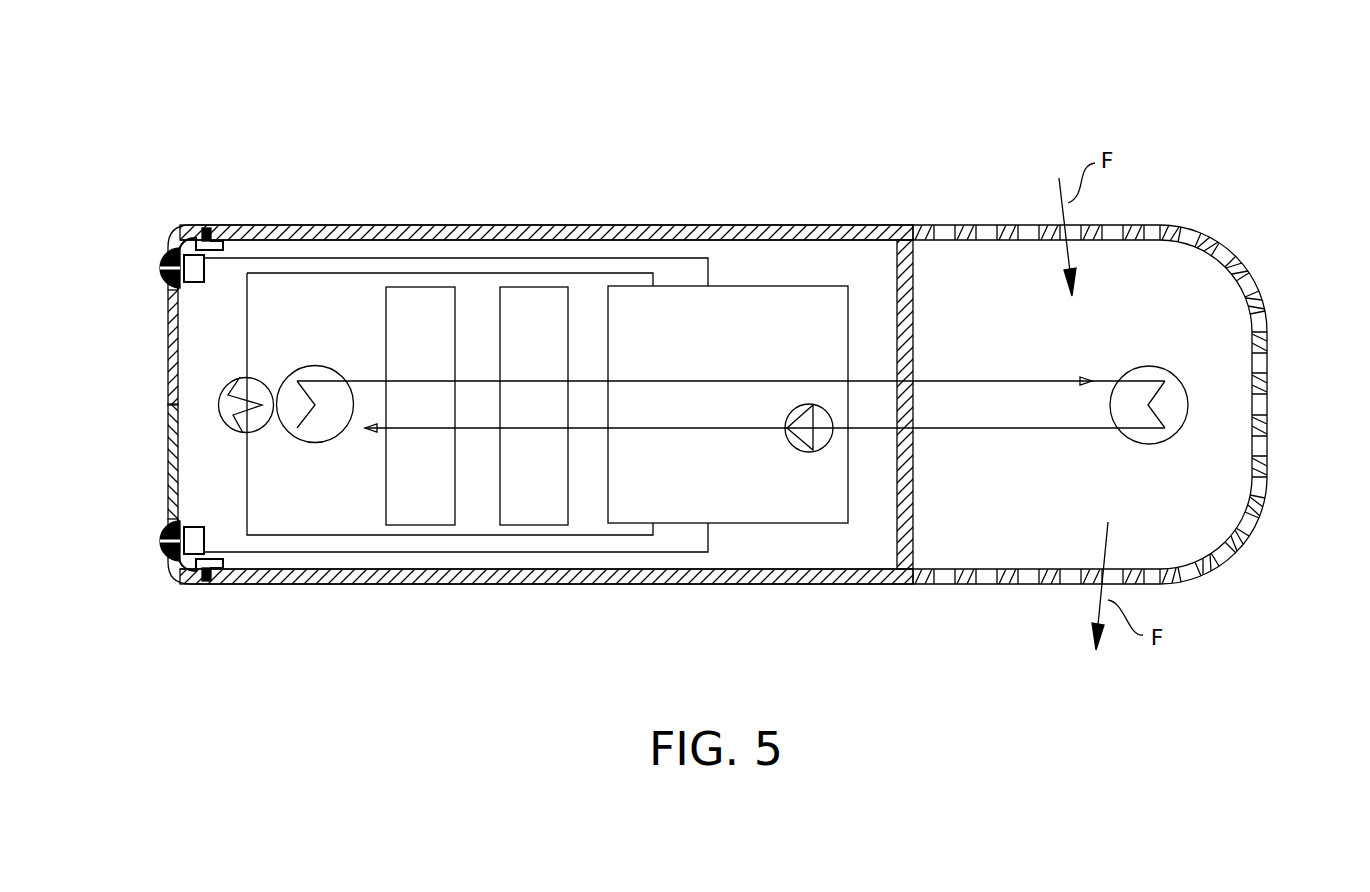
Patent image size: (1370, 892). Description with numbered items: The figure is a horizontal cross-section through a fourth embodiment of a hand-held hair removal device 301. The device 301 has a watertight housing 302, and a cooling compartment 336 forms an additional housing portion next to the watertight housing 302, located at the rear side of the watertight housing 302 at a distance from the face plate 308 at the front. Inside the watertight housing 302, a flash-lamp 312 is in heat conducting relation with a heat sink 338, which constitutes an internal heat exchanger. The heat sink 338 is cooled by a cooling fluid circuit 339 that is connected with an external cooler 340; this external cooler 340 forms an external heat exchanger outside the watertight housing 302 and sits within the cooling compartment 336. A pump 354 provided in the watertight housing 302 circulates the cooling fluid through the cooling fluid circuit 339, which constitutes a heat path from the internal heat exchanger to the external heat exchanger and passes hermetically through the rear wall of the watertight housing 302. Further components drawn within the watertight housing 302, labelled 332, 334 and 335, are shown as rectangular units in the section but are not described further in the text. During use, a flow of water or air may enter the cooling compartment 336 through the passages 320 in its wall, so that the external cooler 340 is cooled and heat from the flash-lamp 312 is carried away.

The hand-held hair removal device 301 is at (1258, 166).
The watertight housing 302 is at (483, 586).
The face plate 308 is at (172, 586).
The flash-lamp 312 is at (217, 403).
The passages 320 is at (1025, 233).
The battery / power unit 332 is at (537, 313).
The controller unit 334 is at (422, 313).
The reservoir 335 is at (760, 313).
The cooling compartment 336 is at (1155, 320).
The heat sink 338 is at (320, 365).
The cooling fluid circuit 339 is at (873, 380).
The external cooler 340 is at (1188, 390).
The pump 354 is at (808, 452).